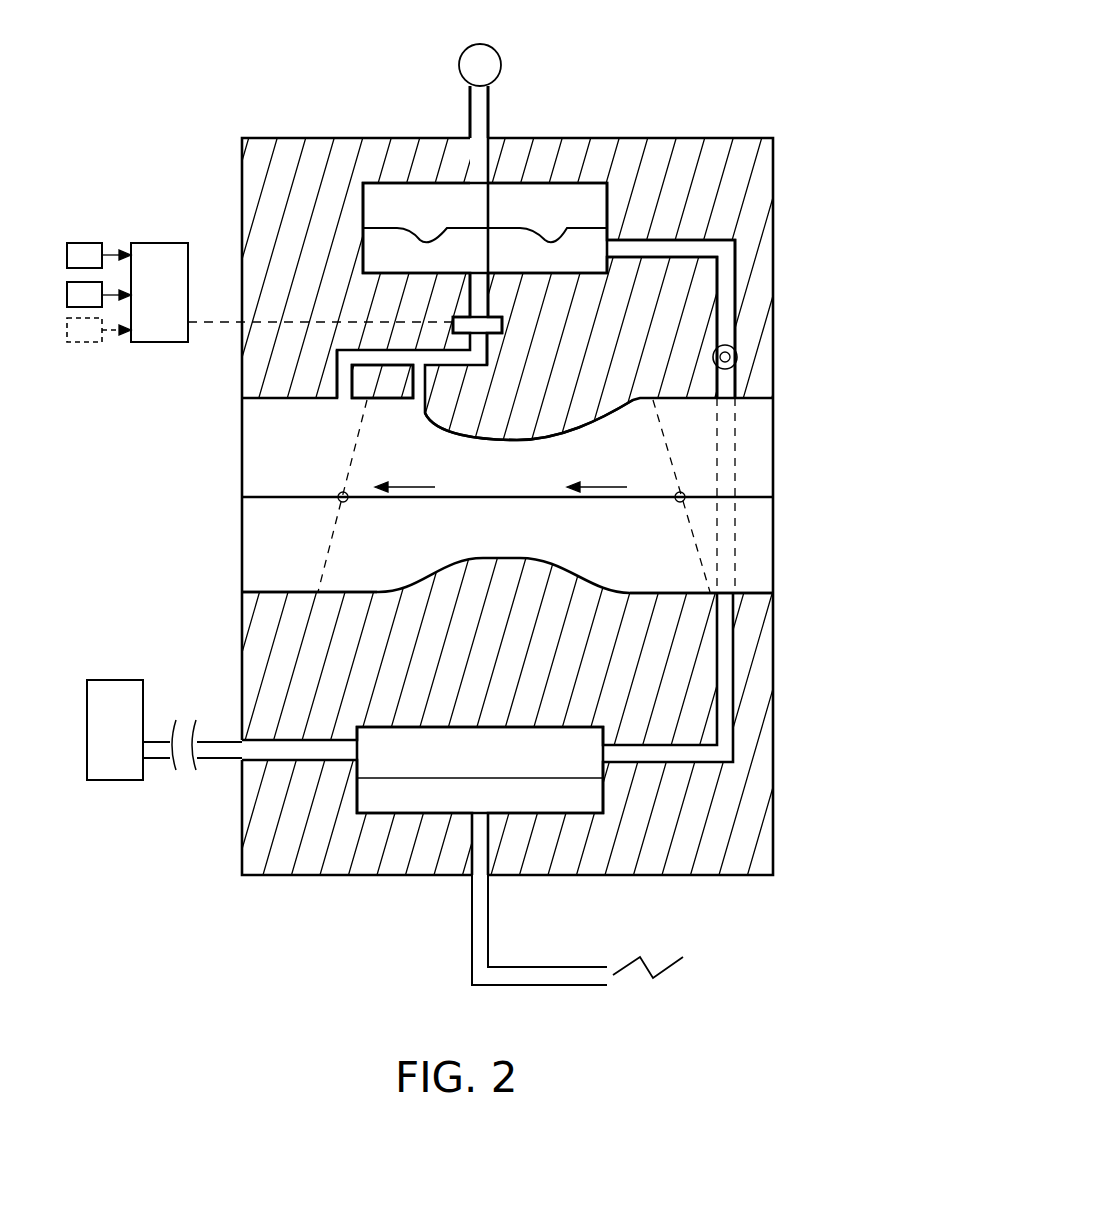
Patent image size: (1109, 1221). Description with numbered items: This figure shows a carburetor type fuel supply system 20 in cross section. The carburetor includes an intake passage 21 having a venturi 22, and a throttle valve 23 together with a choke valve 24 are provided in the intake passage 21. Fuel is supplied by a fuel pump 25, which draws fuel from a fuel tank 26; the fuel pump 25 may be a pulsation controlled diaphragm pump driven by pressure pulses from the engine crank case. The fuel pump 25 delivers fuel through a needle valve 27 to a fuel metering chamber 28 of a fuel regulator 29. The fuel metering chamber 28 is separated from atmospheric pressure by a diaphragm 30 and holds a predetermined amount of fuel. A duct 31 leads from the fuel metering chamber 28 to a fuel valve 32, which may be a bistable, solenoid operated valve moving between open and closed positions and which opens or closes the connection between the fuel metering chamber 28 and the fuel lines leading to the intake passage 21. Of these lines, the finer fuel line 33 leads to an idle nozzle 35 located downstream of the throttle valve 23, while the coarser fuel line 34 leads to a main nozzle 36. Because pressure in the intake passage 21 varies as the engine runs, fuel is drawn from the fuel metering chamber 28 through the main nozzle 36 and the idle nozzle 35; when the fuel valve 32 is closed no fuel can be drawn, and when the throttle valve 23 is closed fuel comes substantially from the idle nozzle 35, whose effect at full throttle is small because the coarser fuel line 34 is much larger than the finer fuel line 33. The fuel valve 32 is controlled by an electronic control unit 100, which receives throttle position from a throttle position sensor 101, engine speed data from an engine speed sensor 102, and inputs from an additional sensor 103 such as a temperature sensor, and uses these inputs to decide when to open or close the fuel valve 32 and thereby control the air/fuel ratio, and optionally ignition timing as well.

The carburetor type fuel supply system 20 is at (775, 90).
The intake passage 21 is at (502, 497).
The venturi 22 is at (523, 560).
The throttle valve 23 is at (293, 503).
The choke valve 24 is at (745, 500).
The fuel pump 25 is at (422, 757).
The fuel tank 26 is at (115, 713).
The needle valve 27 is at (733, 349).
The fuel metering chamber 28 is at (572, 210).
The fuel regulator 29 is at (525, 250).
The diaphragm 30 is at (460, 228).
The duct 31 is at (478, 300).
The fuel valve 32 is at (455, 322).
The finer fuel line 33 is at (343, 376).
The coarser fuel line 34 is at (417, 378).
The idle nozzle 35 is at (342, 403).
The main nozzle 36 is at (418, 415).
The electronic control unit 100 is at (152, 262).
The throttle position sensor 101 is at (92, 258).
The engine speed sensor 102 is at (92, 293).
The additional sensor 103 is at (88, 330).